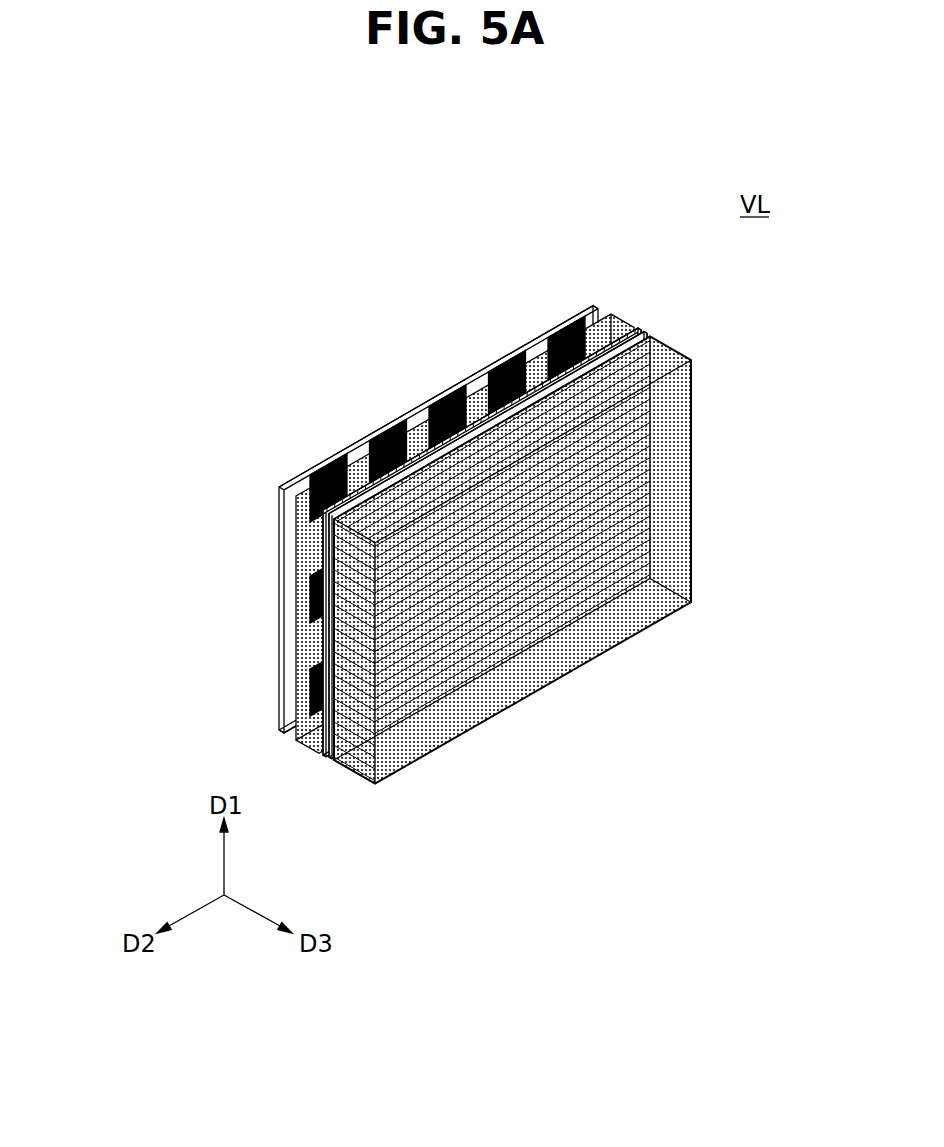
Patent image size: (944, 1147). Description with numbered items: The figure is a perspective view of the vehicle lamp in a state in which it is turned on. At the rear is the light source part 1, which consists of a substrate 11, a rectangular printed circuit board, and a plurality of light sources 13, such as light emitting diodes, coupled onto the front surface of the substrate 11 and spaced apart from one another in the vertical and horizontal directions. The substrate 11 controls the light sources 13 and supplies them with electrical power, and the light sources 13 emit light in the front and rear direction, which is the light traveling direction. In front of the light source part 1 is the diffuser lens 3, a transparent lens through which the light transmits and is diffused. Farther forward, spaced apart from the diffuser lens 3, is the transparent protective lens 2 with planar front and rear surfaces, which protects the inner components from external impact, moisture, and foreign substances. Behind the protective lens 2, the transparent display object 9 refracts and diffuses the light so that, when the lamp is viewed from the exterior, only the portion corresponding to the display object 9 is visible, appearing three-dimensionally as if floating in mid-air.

The light source part 1 is at (208, 501).
The substrate 11 is at (281, 508).
The light source 13 is at (310, 594).
The diffuser lens 3 is at (618, 323).
The protective lens 2 is at (662, 345).
The display object 9 is at (545, 568).